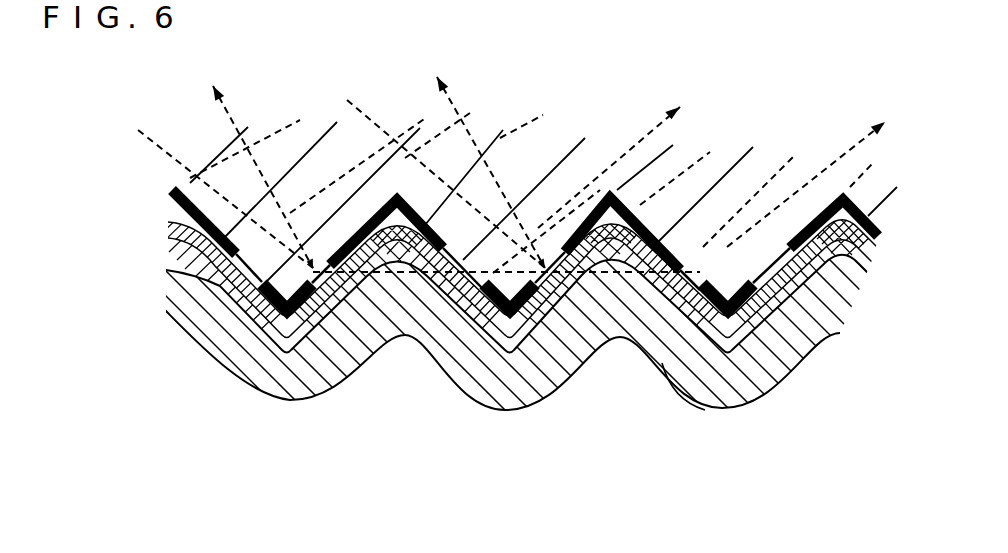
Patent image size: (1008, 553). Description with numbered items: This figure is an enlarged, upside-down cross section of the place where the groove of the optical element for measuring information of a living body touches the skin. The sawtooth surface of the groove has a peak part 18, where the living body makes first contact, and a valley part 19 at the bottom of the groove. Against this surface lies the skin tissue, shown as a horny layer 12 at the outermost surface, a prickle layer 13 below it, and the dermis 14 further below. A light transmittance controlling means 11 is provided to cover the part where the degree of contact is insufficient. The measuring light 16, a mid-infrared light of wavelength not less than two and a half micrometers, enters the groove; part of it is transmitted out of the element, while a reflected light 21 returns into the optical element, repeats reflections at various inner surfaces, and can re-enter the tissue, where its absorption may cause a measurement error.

The light transmittance controlling means 11 is at (370, 228).
The horny layer 12 is at (182, 246).
The prickle layer 13 is at (176, 277).
The dermis 14 is at (232, 340).
The light 16 is at (713, 160).
The peak part 18 is at (288, 318).
The valley part 19 is at (396, 175).
The reflected light 21 is at (379, 160).